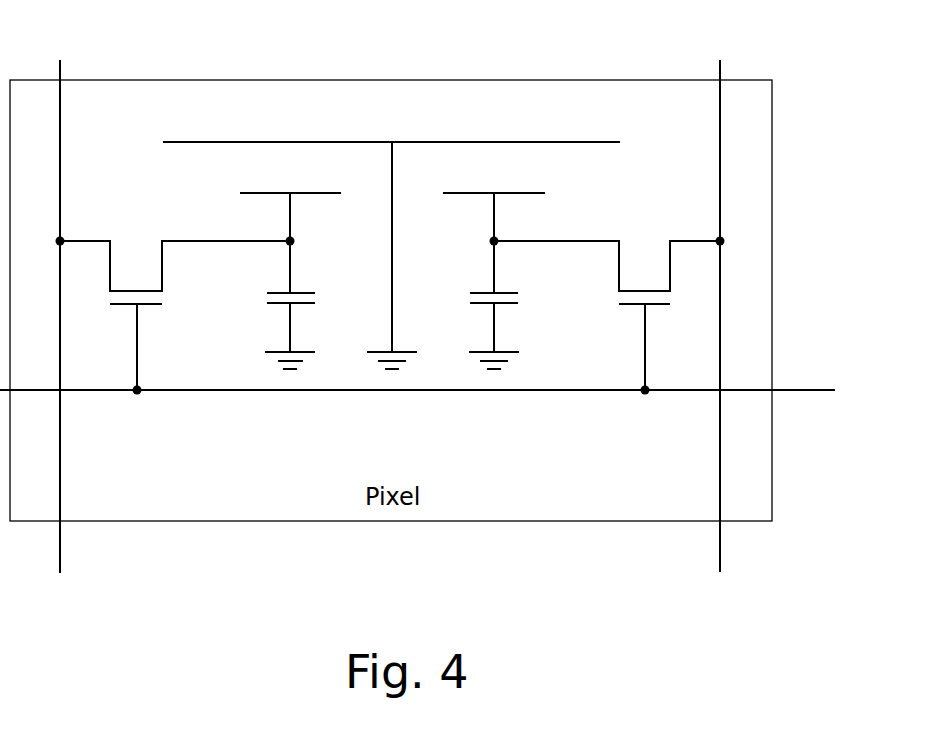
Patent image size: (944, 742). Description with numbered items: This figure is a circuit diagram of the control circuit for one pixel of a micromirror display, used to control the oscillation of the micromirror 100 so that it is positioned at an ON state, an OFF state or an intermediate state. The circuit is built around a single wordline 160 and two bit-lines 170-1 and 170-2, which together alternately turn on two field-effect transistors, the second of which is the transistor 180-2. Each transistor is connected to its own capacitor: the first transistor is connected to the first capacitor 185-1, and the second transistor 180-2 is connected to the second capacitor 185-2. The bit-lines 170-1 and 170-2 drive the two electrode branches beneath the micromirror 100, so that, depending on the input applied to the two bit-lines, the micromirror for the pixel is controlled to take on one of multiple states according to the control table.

The wordline 160 is at (810, 390).
The first bit-line 170-1 is at (60, 62).
The second bit-line 170-2 is at (720, 62).
The micromirror 100 is at (387, 120).
The first capacitor 185-1 is at (268, 298).
The second capacitor 185-2 is at (115, 297).
The second transistor 180-2 is at (613, 298).